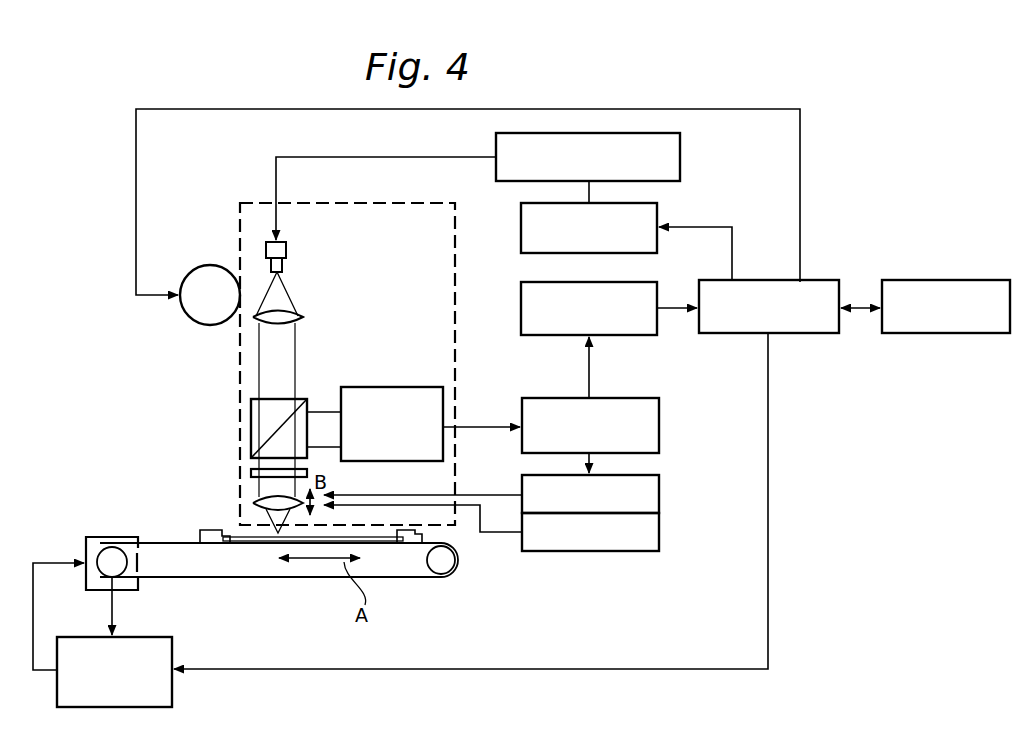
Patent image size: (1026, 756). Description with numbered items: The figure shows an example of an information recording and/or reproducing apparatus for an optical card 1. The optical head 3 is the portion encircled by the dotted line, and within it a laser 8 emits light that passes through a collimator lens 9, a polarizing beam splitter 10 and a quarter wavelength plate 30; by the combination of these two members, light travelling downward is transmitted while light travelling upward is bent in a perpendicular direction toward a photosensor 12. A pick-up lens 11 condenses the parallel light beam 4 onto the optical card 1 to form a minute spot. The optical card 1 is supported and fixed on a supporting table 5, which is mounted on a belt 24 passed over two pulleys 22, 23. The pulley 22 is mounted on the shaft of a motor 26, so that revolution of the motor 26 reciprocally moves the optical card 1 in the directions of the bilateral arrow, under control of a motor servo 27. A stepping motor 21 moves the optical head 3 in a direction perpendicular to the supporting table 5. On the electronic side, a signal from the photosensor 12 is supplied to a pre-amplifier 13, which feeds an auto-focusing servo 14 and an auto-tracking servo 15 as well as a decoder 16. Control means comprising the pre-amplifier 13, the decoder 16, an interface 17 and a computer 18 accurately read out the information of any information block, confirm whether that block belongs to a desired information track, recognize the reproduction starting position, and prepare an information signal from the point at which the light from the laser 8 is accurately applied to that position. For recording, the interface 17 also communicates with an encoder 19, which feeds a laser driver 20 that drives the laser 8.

The optical card 1 is at (250, 545).
The optical head 3 is at (240, 210).
The light beam 4 is at (266, 521).
The supporting table 5 is at (423, 535).
The laser 8 is at (288, 252).
The collimator lens 9 is at (299, 315).
The polarizing beam splitter 10 is at (305, 400).
The pick-up lens 11 is at (258, 497).
The photosensor 12 is at (403, 387).
The pre-amplifier 13 is at (662, 429).
The auto-focusing (AF) servo 14 is at (662, 497).
The auto-tracking (AT) servo 15 is at (662, 535).
The decoder 16 is at (660, 336).
The interface 17 is at (808, 335).
The computer 18 is at (944, 335).
The encoder 19 is at (666, 213).
The laser driver 20 is at (683, 153).
The stepping motor 21 is at (205, 325).
The pulley 22 is at (117, 573).
The pulley 23 is at (437, 568).
The belt 24 is at (313, 578).
The motor 26 is at (88, 582).
The motor servo 27 is at (174, 641).
The ¼ wavelength plate 30 is at (251, 471).